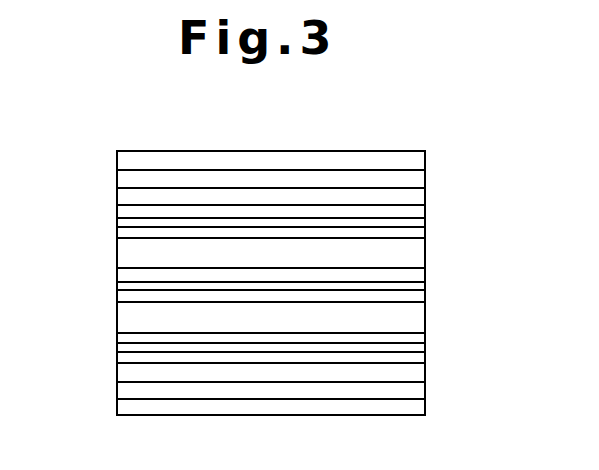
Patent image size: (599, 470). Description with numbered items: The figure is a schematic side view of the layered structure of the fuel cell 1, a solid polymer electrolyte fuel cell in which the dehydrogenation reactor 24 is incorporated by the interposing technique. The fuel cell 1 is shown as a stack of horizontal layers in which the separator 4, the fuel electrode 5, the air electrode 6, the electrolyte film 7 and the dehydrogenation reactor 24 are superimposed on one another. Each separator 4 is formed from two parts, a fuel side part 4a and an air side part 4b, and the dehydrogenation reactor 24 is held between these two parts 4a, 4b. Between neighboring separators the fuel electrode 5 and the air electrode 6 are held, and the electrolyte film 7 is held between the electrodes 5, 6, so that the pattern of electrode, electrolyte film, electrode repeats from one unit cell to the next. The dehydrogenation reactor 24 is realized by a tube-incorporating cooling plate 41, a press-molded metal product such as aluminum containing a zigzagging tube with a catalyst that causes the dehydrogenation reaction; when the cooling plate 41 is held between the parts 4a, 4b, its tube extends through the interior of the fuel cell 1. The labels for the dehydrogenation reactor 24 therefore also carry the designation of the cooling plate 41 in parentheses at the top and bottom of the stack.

The fuel cell 1 is at (386, 135).
The separator 4 is at (418, 253).
The fuel side part 4a is at (418, 193).
The air side part 4b is at (418, 157).
The fuel electrode 5 is at (122, 213).
The air electrode 6 is at (123, 235).
The electrolyte film 7 is at (418, 219).
The dehydrogenation reactor 24 is at (126, 171).
The tube-incorporating cooling plate 41 is at (77, 288).